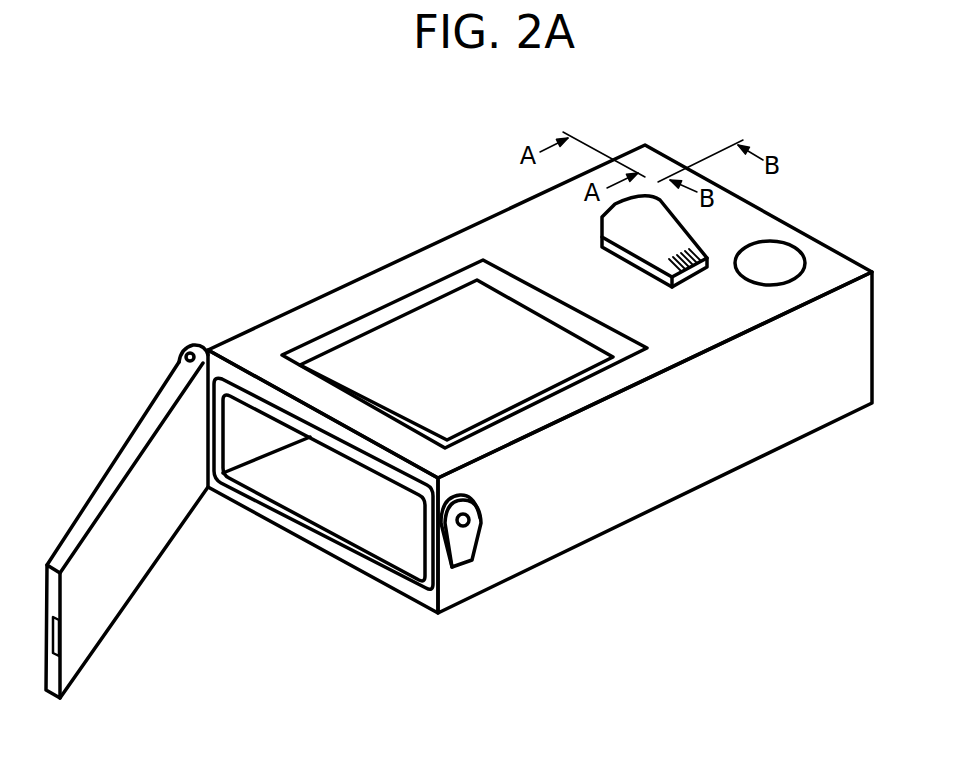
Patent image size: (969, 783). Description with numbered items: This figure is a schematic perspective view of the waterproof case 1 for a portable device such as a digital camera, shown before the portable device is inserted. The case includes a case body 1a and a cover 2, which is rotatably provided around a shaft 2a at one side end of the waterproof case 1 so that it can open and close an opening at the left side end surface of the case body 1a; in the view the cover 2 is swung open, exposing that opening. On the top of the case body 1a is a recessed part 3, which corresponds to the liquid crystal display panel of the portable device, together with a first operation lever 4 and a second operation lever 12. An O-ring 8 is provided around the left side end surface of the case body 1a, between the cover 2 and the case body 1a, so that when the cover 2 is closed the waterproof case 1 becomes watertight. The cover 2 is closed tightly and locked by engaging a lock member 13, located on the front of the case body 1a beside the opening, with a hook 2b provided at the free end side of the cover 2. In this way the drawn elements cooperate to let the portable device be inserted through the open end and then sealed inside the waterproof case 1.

The waterproof case 1 is at (697, 510).
The case body 1a is at (500, 237).
The cover 2 is at (147, 480).
The shaft 2a is at (189, 343).
The hook 2b is at (58, 633).
The recessed part 3 is at (430, 330).
The first operation lever 4 is at (680, 240).
The O-ring 8 is at (370, 568).
The second operation lever 12 is at (792, 263).
The lock member 13 is at (463, 553).